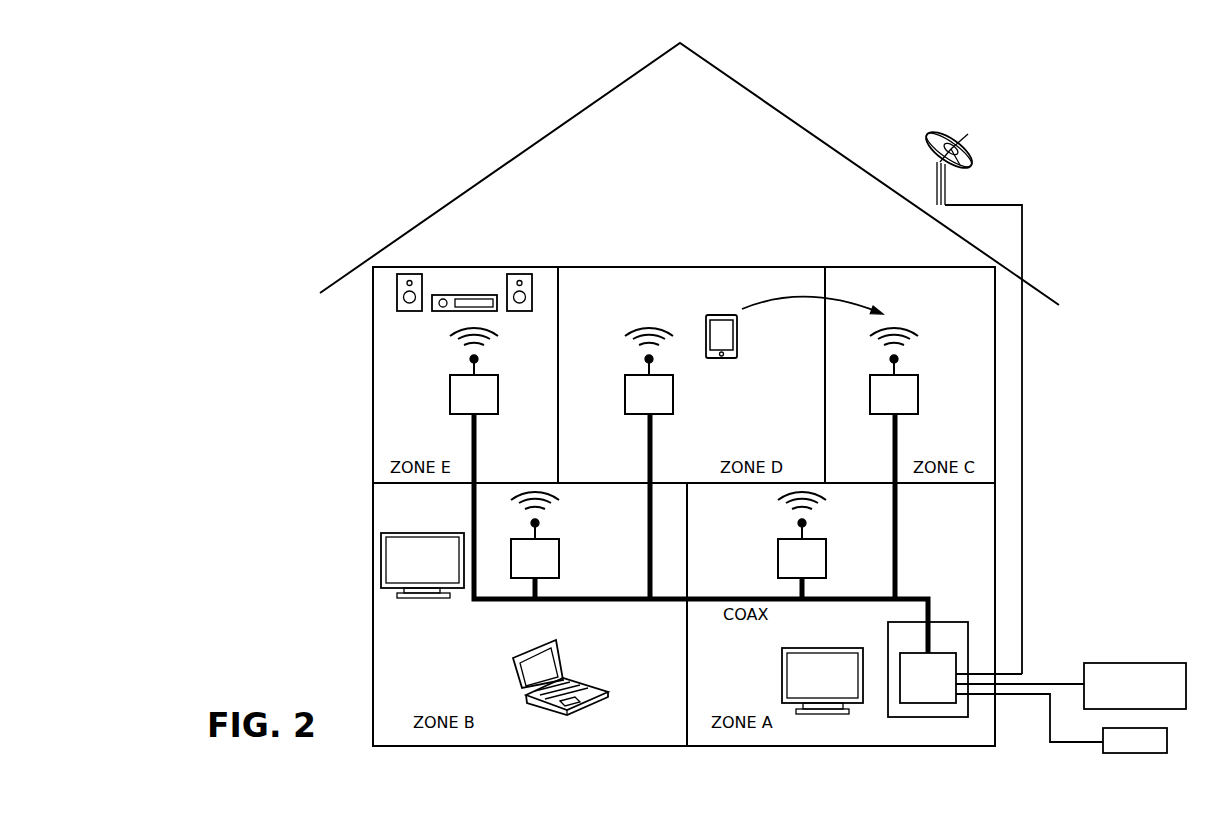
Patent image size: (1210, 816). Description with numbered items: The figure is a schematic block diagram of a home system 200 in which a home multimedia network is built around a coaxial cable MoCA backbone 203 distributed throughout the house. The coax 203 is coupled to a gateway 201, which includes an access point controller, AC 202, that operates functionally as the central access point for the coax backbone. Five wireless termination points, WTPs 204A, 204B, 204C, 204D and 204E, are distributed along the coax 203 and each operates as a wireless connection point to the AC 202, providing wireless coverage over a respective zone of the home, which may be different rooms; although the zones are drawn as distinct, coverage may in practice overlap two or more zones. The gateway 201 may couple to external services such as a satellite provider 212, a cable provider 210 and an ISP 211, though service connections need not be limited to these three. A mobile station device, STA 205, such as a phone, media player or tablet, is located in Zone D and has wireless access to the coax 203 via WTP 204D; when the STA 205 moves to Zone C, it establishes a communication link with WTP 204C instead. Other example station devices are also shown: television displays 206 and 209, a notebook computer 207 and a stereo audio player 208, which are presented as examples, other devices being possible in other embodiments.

The home system 200 is at (342, 145).
The gateway 201 is at (900, 717).
The access point controller 202 is at (922, 704).
The coaxial cable MoCA backbone 203 is at (593, 603).
The wireless termination point 204A is at (850, 548).
The wireless termination point 204B is at (560, 560).
The wireless termination point 204C is at (919, 395).
The wireless termination point 204D is at (674, 404).
The wireless termination point 204E is at (499, 392).
The mobile station device 205 is at (765, 340).
The television display 206 is at (386, 589).
The notebook computer 207 is at (555, 712).
The stereo audio player 208 is at (438, 316).
The television display 209 is at (822, 714).
The cable provider 210 is at (1140, 663).
The ISP 211 is at (1110, 753).
The satellite provider 212 is at (951, 131).